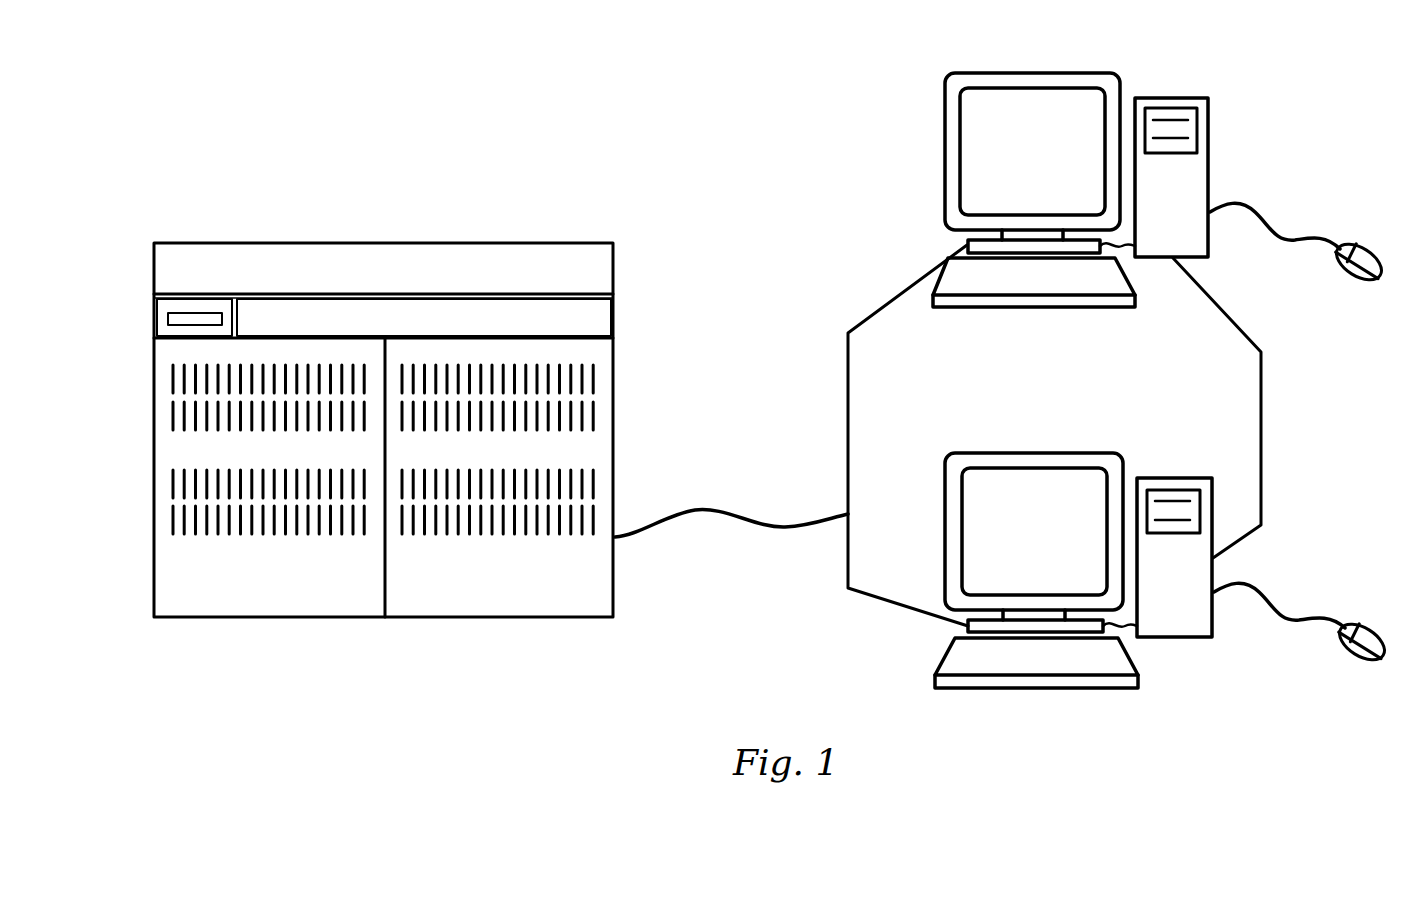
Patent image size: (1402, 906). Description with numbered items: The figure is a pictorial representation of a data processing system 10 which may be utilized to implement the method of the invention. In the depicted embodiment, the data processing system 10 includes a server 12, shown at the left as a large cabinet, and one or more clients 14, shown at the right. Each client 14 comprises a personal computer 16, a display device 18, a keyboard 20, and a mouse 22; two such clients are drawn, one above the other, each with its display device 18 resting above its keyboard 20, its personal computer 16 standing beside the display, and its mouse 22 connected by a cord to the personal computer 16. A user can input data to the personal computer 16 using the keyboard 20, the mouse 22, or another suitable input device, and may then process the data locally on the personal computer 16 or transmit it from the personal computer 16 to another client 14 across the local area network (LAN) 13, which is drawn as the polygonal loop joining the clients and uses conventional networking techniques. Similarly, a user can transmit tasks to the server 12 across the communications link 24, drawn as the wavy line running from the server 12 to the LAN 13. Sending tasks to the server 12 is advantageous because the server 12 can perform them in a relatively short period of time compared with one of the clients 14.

The data processing system 10 is at (768, 118).
The server 12 is at (615, 393).
The local area network (LAN) 13 is at (1262, 412).
The client 14 is at (1138, 714).
The personal computer 16 is at (1210, 105).
The display device 18 is at (1095, 73).
The keyboard 20 is at (942, 308).
The mouse 22 is at (1372, 246).
The communications link 24 is at (732, 512).